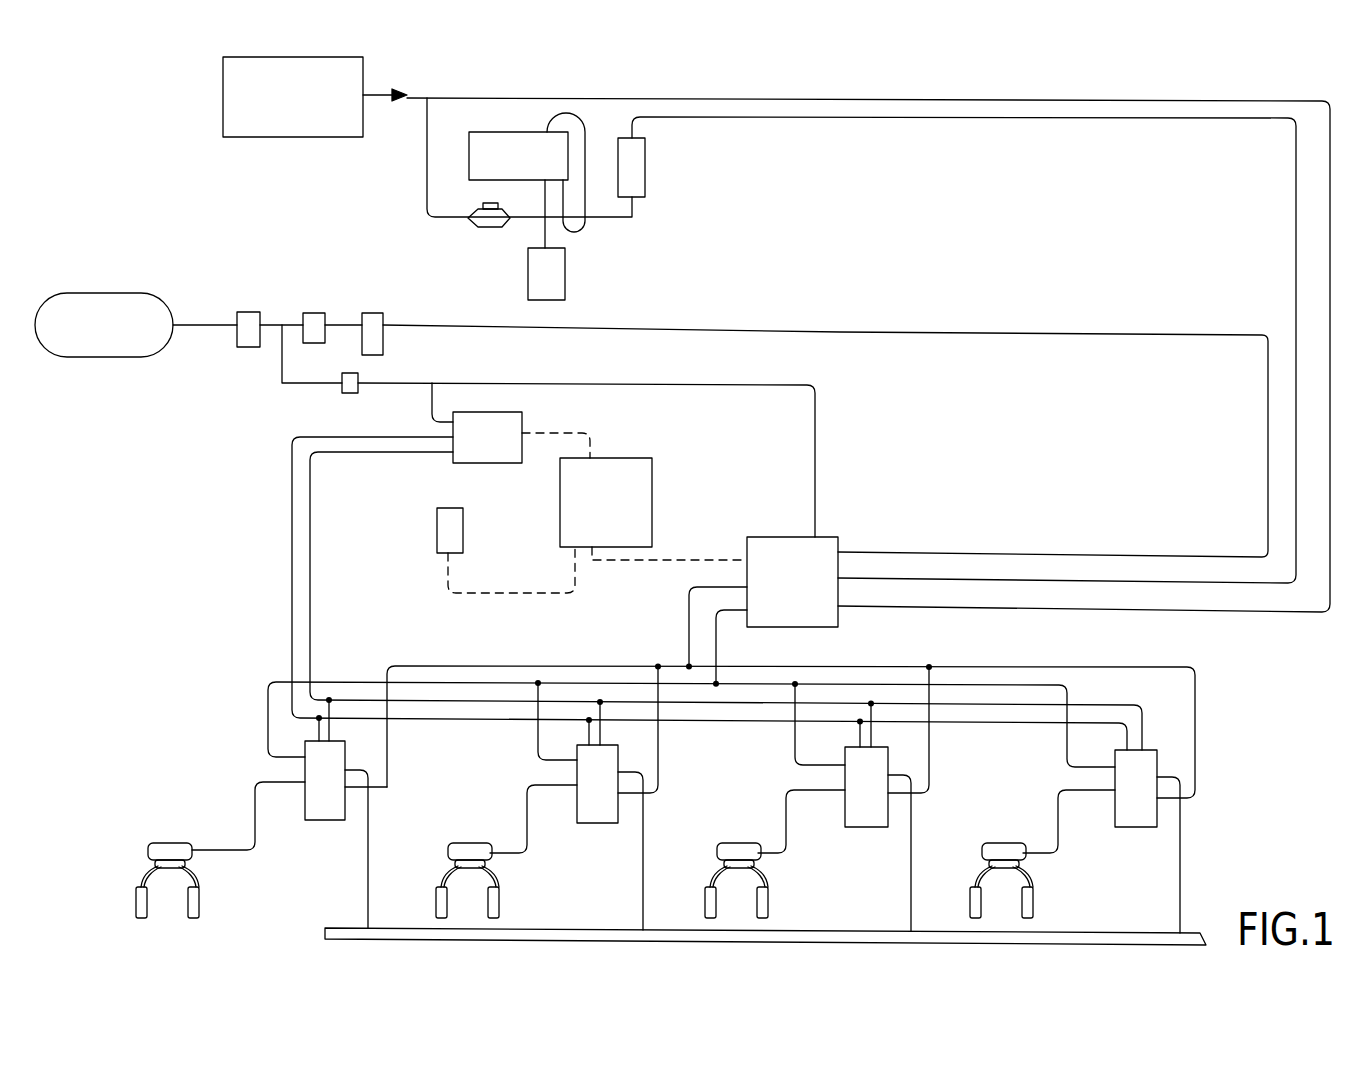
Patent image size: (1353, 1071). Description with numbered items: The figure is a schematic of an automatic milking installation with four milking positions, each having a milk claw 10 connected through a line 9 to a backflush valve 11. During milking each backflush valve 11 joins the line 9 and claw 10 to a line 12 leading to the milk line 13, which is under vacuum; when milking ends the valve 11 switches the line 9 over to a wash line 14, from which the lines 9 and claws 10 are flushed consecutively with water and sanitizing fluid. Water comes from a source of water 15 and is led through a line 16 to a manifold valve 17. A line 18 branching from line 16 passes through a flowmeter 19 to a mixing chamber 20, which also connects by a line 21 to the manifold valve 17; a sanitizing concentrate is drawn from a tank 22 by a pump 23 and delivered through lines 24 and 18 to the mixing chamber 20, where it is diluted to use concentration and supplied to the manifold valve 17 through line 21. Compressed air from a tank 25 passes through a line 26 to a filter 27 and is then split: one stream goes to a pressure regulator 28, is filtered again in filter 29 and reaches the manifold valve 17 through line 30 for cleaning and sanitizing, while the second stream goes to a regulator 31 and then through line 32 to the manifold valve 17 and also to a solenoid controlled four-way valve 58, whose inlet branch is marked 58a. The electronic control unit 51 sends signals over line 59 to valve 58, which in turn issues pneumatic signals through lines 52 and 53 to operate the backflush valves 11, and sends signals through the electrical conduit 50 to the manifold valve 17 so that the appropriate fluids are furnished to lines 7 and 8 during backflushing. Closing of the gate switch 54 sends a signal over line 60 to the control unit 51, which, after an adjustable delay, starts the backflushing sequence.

The line 7 is at (716, 641).
The line 8 is at (689, 597).
The line 9 is at (255, 807).
The milk claw 10 is at (199, 876).
The backflush valve 11 is at (322, 823).
The line 12 is at (370, 833).
The milk line 13 is at (323, 931).
The wash line 14 is at (387, 766).
The source of water 15 is at (351, 58).
The line 16 is at (845, 99).
The manifold valve 17 is at (838, 540).
The line 18 is at (427, 166).
The flowmeter 19 is at (479, 229).
The mixing chamber 20 is at (646, 171).
The line 21 is at (862, 118).
The tank 22 is at (566, 283).
The pump 23 is at (521, 132).
The line 24 is at (587, 147).
The tank 25 is at (160, 298).
The line 26 is at (195, 330).
The filter 27 is at (253, 312).
The pressure regulator 28 is at (313, 313).
The filter 29 is at (380, 313).
The line 30 is at (880, 332).
The regulator 31 is at (359, 380).
The line 32 is at (573, 384).
The conduit 50 is at (671, 560).
The electronic control unit 51 is at (652, 482).
The line 52 is at (291, 592).
The line 53 is at (310, 596).
The gate switch 54 is at (463, 523).
The four-way valve 58 is at (487, 412).
The inlet line 58a is at (430, 398).
The line 59 is at (543, 433).
The line 60 is at (491, 593).